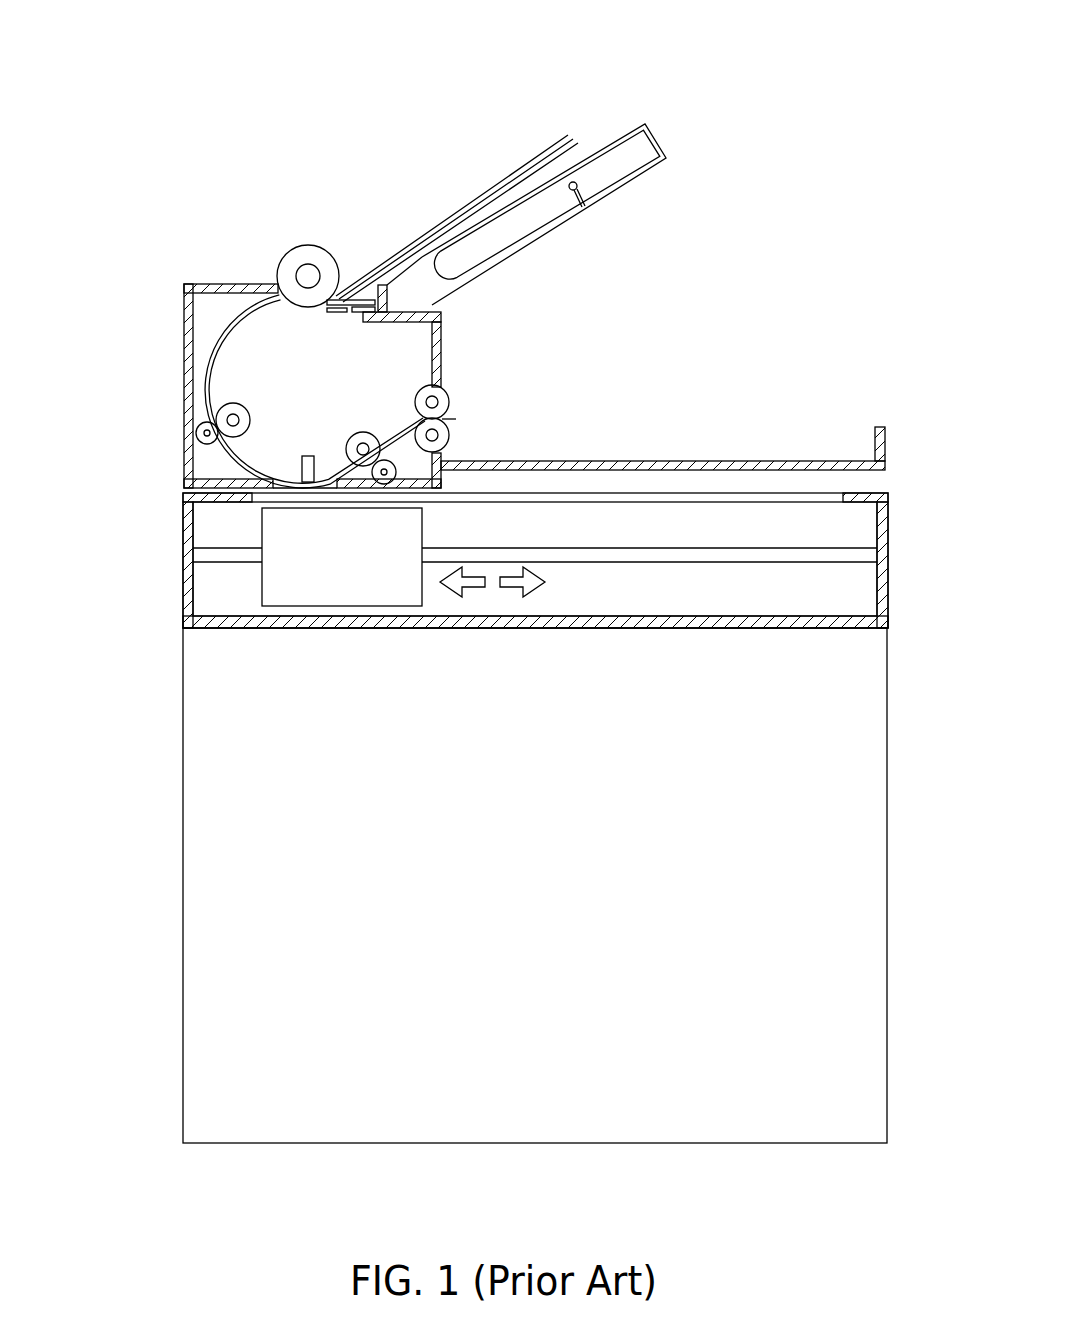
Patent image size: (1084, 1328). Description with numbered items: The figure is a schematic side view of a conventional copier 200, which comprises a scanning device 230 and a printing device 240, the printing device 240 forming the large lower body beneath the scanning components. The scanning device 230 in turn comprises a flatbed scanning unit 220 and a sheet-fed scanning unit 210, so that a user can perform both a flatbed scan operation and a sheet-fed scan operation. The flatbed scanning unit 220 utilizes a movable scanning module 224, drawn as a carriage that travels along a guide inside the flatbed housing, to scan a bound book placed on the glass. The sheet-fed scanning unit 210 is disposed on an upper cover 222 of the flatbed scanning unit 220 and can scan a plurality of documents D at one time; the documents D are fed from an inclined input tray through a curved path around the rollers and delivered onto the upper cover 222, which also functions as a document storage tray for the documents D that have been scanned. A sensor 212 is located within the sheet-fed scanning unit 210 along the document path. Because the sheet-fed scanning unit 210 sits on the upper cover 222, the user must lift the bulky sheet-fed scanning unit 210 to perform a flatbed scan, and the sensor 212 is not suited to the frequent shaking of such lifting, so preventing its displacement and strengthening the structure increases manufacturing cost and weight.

The conventional copier 200 is at (585, 48).
The sheet-fed scanning unit 210 is at (174, 302).
The sensor 212 is at (305, 455).
The flatbed scanning unit 220 is at (171, 535).
The upper cover 222 is at (813, 461).
The movable scanning module 224 is at (262, 597).
The scanning device 230 is at (833, 44).
The printing device 240 is at (173, 693).
The documents D is at (457, 220).